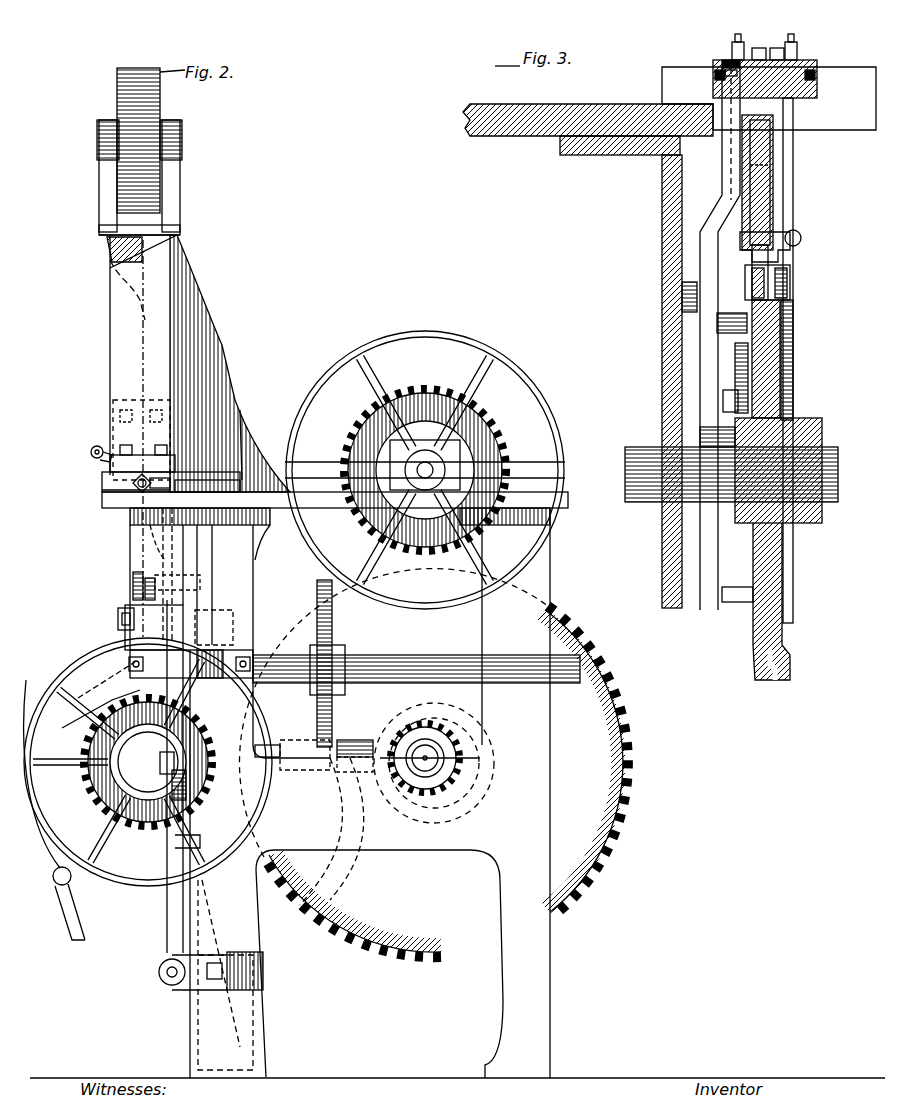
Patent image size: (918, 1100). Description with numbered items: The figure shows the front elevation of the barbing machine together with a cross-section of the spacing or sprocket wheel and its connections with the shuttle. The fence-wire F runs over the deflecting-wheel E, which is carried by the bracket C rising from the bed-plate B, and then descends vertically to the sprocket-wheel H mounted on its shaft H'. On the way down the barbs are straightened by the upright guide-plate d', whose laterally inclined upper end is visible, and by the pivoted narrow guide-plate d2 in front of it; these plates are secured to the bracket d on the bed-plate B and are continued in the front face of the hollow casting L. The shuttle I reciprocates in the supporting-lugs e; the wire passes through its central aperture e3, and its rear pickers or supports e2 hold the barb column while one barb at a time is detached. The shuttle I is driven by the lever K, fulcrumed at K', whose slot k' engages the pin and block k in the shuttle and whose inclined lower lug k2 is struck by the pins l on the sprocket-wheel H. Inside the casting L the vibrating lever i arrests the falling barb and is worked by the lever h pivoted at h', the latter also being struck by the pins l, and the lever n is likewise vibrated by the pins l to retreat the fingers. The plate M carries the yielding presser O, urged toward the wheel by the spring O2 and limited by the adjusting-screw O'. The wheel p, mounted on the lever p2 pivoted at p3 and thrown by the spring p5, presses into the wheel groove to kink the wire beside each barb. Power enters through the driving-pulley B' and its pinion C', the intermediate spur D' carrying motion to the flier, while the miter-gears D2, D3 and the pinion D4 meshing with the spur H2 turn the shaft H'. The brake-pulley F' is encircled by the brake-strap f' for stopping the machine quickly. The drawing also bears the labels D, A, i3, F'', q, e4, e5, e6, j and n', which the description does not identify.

In FIG. 2, the deflecting-wheel E is at (145, 118).
In FIG. 2, the roll yoke D is at (151, 191).
In FIG. 2, the fence-wire F is at (200, 363).
In FIG. 2, the bracket d is at (188, 355).
In FIG. 2, the guide-plate d' is at (135, 440).
In FIG. 2, the second guide-plate d2 is at (140, 450).
In FIG. 2, the pivot pin i3 is at (108, 468).
In FIG. 2, the shuttle I is at (125, 490).
In FIG. 3, the shuttle I is at (815, 76).
In FIG. 2, the supporting-lugs e is at (180, 486).
In FIG. 3, the supporting-lugs e is at (665, 92).
In FIG. 2, the central aperture e3 is at (140, 492).
In FIG. 2, the bed-plate B is at (340, 576).
In FIG. 3, the bed-plate B is at (588, 117).
In FIG. 2, the frame A is at (457, 793).
In FIG. 3, the frame A is at (662, 352).
In FIG. 2, the casting L is at (135, 552).
In FIG. 3, the casting L is at (793, 200).
In FIG. 2, the lever K is at (182, 574).
In FIG. 3, the lever K is at (681, 339).
In FIG. 2, the fulcrum K' is at (189, 574).
In FIG. 3, the fulcrum K' is at (662, 305).
In FIG. 2, the sprocket-wheel H is at (135, 610).
In FIG. 3, the sprocket-wheel H is at (789, 456).
In FIG. 2, the shaft H' is at (334, 645).
In FIG. 3, the shaft H' is at (745, 485).
In FIG. 2, the plate M is at (158, 652).
In FIG. 2, the spring O2 is at (203, 640).
In FIG. 2, the adjusting-screw O' is at (103, 681).
In FIG. 2, the yielding presser O is at (96, 714).
In FIG. 2, the brake-pulley F' is at (148, 762).
In FIG. 2, the gear wheel F'' is at (148, 782).
In FIG. 2, the brake-strap f' is at (98, 810).
In FIG. 2, the lever p2 is at (170, 936).
In FIG. 2, the wheel p is at (188, 800).
In FIG. 2, the catch q is at (176, 770).
In FIG. 2, the pivot p3 is at (195, 842).
In FIG. 2, the spring p5 is at (265, 975).
In FIG. 2, the intermediate spur D' is at (433, 777).
In FIG. 2, the driving-pulley B' is at (425, 470).
In FIG. 2, the pinion C' is at (428, 468).
In FIG. 2, the bracket C is at (417, 472).
In FIG. 2, the spur H2 is at (335, 640).
In FIG. 2, the pinion D4 is at (318, 755).
In FIG. 2, the gear-wheel D3 is at (378, 745).
In FIG. 2, the miter-gear wheel D2 is at (450, 740).
In FIG. 3, the rear pickers e2 is at (714, 76).
In FIG. 3, the bolt e4 is at (736, 50).
In FIG. 3, the clamp pieces e5 is at (758, 50).
In FIG. 3, the bolt e6 is at (792, 46).
In FIG. 3, the pin and block k is at (704, 51).
In FIG. 3, the slot k' is at (700, 65).
In FIG. 3, the lug k2 is at (775, 172).
In FIG. 3, the vibrating lever i is at (770, 150).
In FIG. 3, the lever h is at (797, 255).
In FIG. 3, the pivot pin h' is at (808, 247).
In FIG. 3, the block j is at (790, 282).
In FIG. 3, the lever n is at (780, 376).
In FIG. 3, the spring seat n' is at (778, 386).
In FIG. 3, the pins l is at (735, 602).